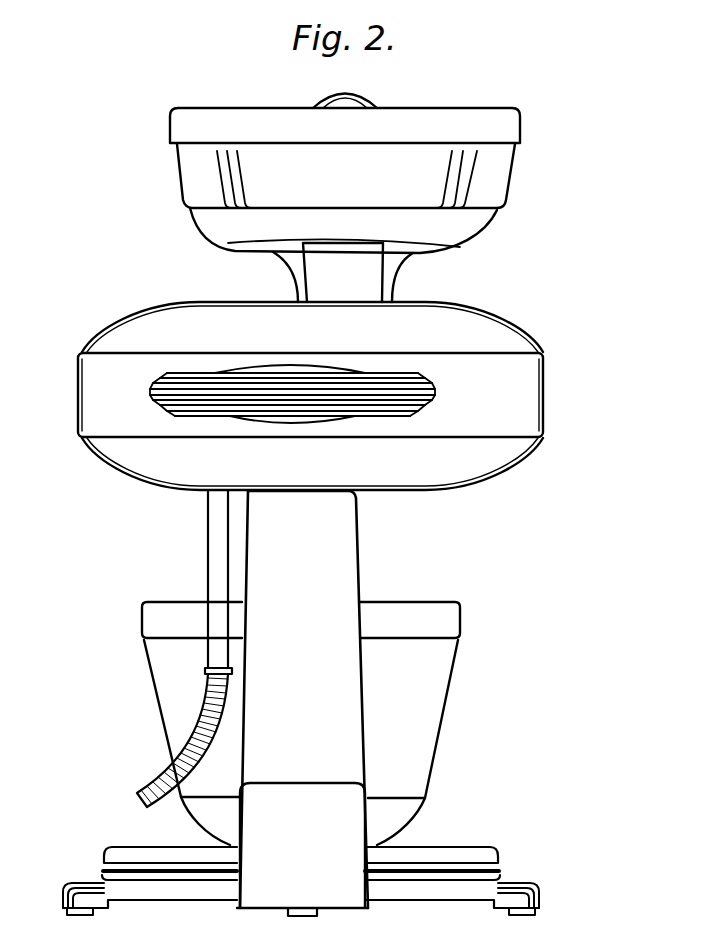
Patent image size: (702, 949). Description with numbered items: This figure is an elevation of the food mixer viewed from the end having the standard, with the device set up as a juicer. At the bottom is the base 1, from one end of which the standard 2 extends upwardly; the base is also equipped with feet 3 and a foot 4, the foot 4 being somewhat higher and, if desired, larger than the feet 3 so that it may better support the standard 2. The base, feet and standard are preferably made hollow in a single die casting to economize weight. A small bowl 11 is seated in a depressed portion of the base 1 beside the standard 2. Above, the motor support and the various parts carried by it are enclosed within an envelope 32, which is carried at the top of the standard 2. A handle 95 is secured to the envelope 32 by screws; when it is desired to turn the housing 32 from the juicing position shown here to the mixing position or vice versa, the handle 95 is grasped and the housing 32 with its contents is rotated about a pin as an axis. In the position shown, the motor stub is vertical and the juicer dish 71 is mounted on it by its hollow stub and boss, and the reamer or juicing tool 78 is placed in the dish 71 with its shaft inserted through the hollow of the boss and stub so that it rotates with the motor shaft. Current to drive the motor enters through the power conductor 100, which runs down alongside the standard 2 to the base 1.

The base 1 is at (497, 847).
The standard 2 is at (362, 569).
The feet 3 is at (63, 888).
The foot 4 is at (320, 783).
The small bowl 11 is at (442, 710).
The envelope 32 is at (513, 331).
The dish 71 is at (512, 173).
The reamer 78 is at (357, 98).
The handle 95 is at (432, 389).
The power conductor 100 is at (210, 537).